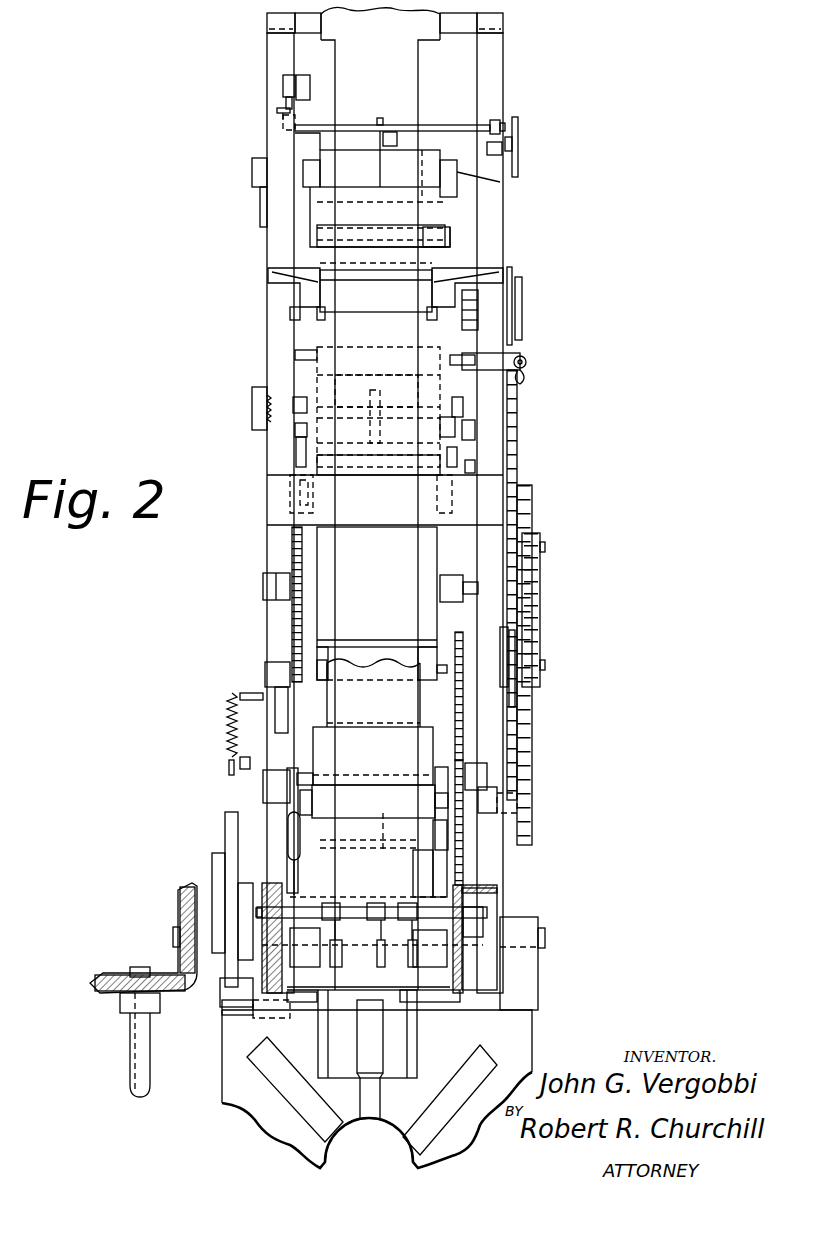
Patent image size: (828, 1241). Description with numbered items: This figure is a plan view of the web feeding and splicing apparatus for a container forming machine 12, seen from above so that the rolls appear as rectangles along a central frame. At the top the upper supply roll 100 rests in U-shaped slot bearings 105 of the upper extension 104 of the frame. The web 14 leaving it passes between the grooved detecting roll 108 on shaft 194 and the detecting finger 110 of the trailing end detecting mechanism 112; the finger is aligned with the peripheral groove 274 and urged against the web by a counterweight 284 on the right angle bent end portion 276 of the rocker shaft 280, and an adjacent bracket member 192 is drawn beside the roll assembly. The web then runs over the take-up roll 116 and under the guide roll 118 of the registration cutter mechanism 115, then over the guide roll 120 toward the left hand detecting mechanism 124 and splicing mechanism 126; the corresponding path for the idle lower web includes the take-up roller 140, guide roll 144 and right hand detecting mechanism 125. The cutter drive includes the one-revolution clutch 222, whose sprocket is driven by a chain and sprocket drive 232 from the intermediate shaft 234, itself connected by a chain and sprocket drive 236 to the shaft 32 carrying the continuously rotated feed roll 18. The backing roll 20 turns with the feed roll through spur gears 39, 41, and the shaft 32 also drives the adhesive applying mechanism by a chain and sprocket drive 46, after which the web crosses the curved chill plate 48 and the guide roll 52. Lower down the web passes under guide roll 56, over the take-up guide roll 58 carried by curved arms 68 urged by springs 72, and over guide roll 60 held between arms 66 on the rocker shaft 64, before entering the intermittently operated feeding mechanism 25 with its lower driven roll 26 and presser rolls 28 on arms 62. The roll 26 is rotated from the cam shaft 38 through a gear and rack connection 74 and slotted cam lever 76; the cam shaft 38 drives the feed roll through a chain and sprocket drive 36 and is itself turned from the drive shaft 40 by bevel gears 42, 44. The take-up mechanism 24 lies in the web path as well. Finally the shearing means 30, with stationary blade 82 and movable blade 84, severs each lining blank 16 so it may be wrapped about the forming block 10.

The forming block 10 is at (252, 1089).
The container forming machine 12 is at (240, 1066).
The web 14 is at (429, 873).
The lining blank 16 is at (400, 1057).
The feed roll 18 is at (323, 670).
The backing roll 20 is at (317, 555).
The take-up mechanism 24 is at (440, 858).
The intermittently operated feeding mechanism 25 is at (440, 971).
The lower driven roll 26 is at (310, 927).
The upper presser rolls 28 is at (407, 958).
The shearing means 30 is at (404, 1003).
The shaft 32 is at (313, 657).
The chain and sprocket drive 36 is at (465, 713).
The cam shaft 38 is at (177, 938).
The spur gear 39 is at (315, 673).
The drive shaft 40 is at (138, 967).
The spur gear 41 is at (297, 610).
The bevel gear 42 is at (97, 977).
The bevel gear 44 is at (185, 893).
The chain and sprocket drive 46 is at (532, 712).
The curved chill plate 48 is at (330, 668).
The guide roll 52 is at (320, 727).
The guide roll 56 is at (353, 777).
The take-up guide roll 58 is at (397, 840).
The guide roll 60 is at (387, 845).
The arms 62 is at (323, 958).
The rocker shaft 64 is at (257, 912).
The arms 66 is at (295, 897).
The curved arms 68 is at (452, 827).
The springs 72 is at (230, 730).
The gear and rack connection 74 is at (212, 847).
The slotted cam lever 76 is at (297, 897).
The stationary shear blade 82 is at (285, 1022).
The movable blade 84 is at (417, 1002).
The upper supply roll 100 is at (422, 57).
The upper extension 104 is at (275, 50).
The U-shaped slot bearings 105 is at (267, 25).
The grooved detecting roll 108 is at (410, 155).
The detecting finger 110 is at (397, 130).
The trailing end detecting mechanism 112 is at (315, 148).
The registration cutter mechanism 115 is at (305, 254).
The take-up roll 116 is at (332, 238).
The guide roll 118 is at (399, 296).
The guide roll 120 is at (360, 476).
The left hand detecting mechanism 124 is at (388, 472).
The right hand detecting mechanism 125 is at (394, 383).
The splicing mechanism 126 is at (347, 397).
The take-up roller 140 is at (457, 240).
The guide roll 144 is at (322, 347).
The bracket 192 is at (313, 207).
The shaft 194 is at (455, 173).
The one-revolution clutch 222 is at (527, 297).
The chain and sprocket drive 232 is at (518, 420).
The intermediate shaft 234 is at (545, 547).
The chain and sprocket drive 236 is at (541, 615).
The peripheral groove 274 is at (380, 180).
The right angle bent end portion 276 is at (286, 122).
The rocker shaft 280 is at (320, 125).
The counterweight 284 is at (280, 108).